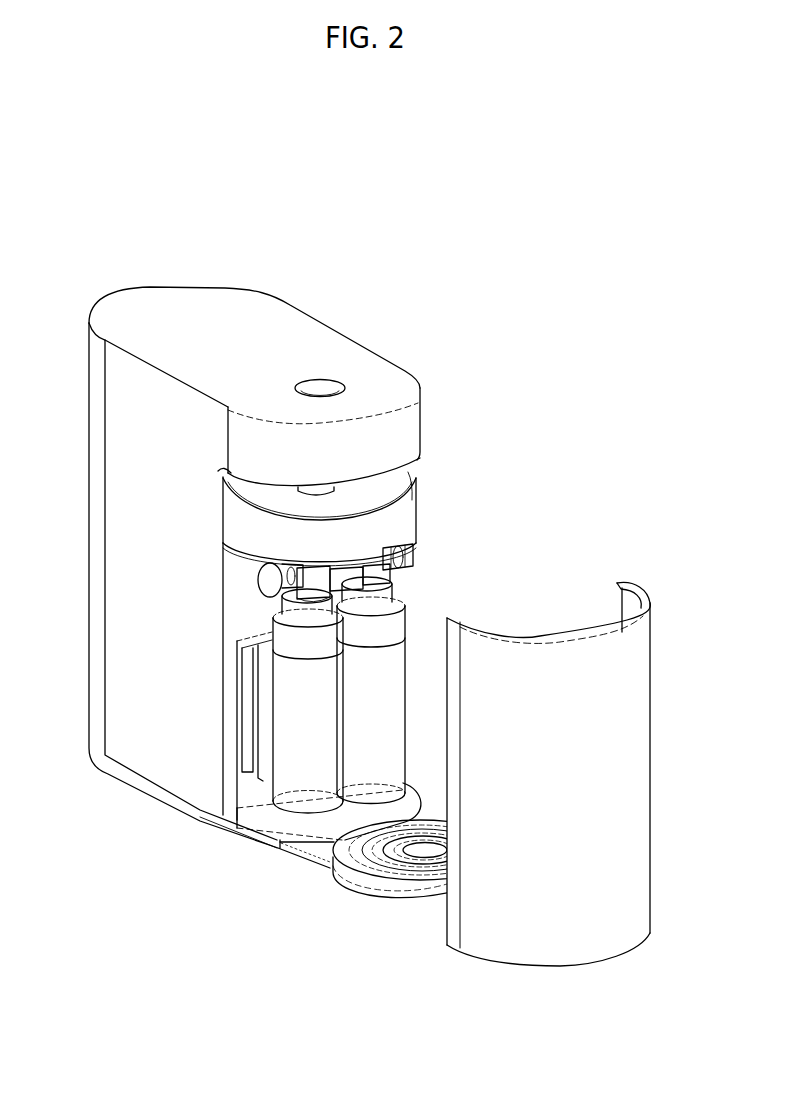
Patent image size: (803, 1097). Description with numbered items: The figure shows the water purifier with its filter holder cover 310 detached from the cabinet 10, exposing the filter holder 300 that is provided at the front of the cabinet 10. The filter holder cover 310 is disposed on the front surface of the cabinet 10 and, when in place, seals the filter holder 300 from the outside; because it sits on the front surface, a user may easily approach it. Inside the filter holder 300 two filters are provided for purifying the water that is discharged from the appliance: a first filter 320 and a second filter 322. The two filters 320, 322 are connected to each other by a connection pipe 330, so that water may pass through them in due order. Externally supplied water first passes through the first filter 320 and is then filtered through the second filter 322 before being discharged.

The cabinet 10 is at (120, 523).
The filter holder 300 is at (262, 720).
The filter holder cover 310 is at (642, 790).
The first filter 320 is at (307, 795).
The second filter 322 is at (371, 780).
The connection pipe 330 is at (250, 558).